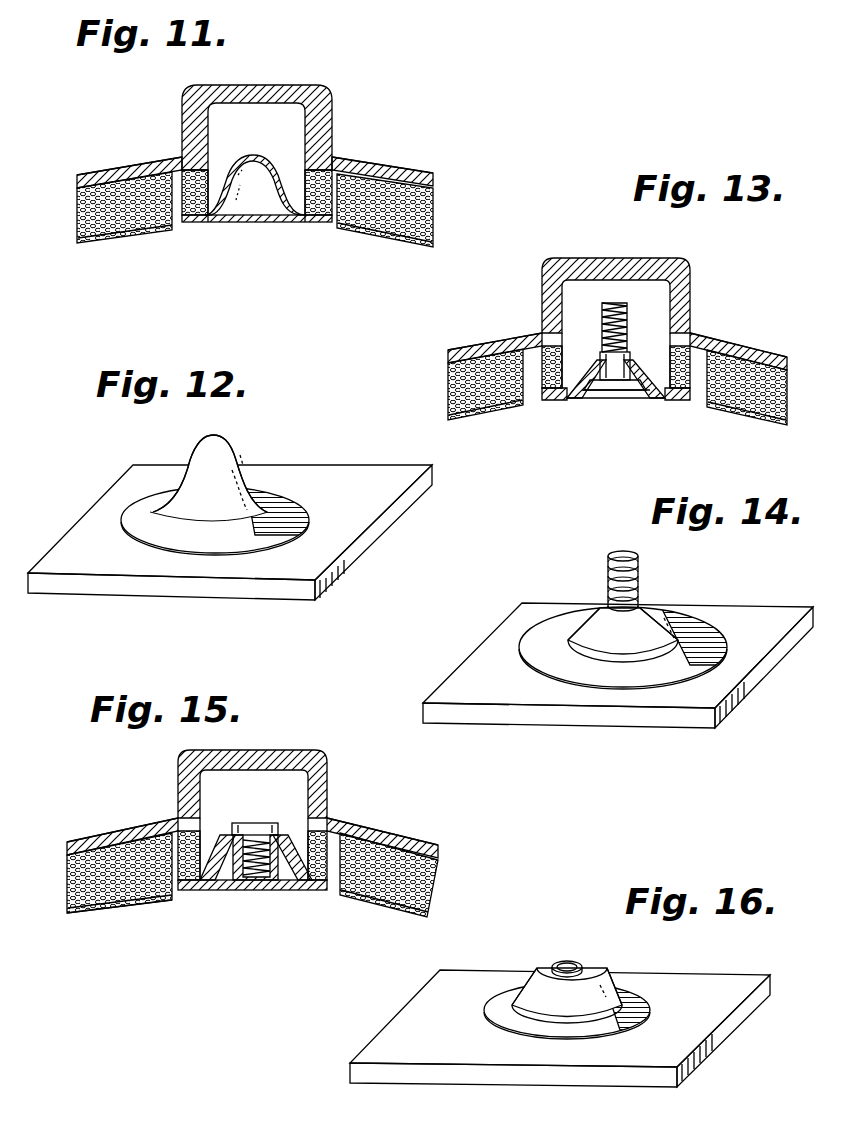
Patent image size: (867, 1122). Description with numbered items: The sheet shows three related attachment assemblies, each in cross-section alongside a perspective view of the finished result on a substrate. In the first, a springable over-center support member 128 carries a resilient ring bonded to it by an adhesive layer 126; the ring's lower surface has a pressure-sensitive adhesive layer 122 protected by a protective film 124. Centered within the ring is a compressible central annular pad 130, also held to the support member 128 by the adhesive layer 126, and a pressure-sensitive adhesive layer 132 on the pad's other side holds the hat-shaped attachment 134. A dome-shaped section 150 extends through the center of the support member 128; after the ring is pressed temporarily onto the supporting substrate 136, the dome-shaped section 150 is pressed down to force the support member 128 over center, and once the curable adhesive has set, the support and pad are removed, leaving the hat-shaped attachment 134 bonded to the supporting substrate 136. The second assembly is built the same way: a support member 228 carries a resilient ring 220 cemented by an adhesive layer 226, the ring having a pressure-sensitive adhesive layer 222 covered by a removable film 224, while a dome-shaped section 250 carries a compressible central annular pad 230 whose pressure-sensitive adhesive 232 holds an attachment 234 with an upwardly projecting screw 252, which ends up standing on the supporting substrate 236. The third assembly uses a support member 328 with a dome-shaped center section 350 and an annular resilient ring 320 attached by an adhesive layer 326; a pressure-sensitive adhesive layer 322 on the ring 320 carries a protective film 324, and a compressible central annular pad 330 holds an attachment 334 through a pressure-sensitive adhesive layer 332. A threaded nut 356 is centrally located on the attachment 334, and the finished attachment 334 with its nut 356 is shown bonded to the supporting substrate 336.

In FIG. 11, the pressure-sensitive adhesive layer 122 is at (150, 233).
In FIG. 11, the protective film 124 is at (90, 242).
In FIG. 11, the adhesive layer 126 is at (193, 170).
In FIG. 11, the springable support member 128 is at (110, 167).
In FIG. 11, the compressible central annular pad 130 is at (340, 172).
In FIG. 11, the pressure-sensitive adhesive layer 132 is at (200, 222).
In FIG. 11, the hat-shaped attachment 134 is at (290, 222).
In FIG. 12, the hat-shaped attachment 134 is at (217, 455).
In FIG. 12, the supporting substrate 136 is at (338, 533).
In FIG. 11, the dome-shaped section 150 is at (318, 113).
In FIG. 13, the resilient ring 220 is at (763, 413).
In FIG. 13, the pressure-sensitive adhesive layer 222 is at (480, 413).
In FIG. 13, the removable film 224 is at (523, 410).
In FIG. 13, the adhesive layer 226 is at (497, 342).
In FIG. 13, the support member 228 is at (520, 333).
In FIG. 13, the compressible central annular pad 230 is at (537, 393).
In FIG. 13, the pressure-sensitive adhesive 232 is at (687, 400).
In FIG. 13, the attachment 234 is at (660, 400).
In FIG. 14, the attachment 234 is at (557, 630).
In FIG. 14, the supporting substrate 236 is at (722, 622).
In FIG. 13, the dome-shaped section 250 is at (660, 266).
In FIG. 13, the screw 252 is at (630, 323).
In FIG. 14, the screw 252 is at (640, 582).
In FIG. 15, the annular resilient ring 320 is at (393, 903).
In FIG. 15, the pressure-sensitive adhesive layer 322 is at (337, 897).
In FIG. 15, the protective film 324 is at (92, 917).
In FIG. 15, the adhesive layer 326 is at (410, 847).
In FIG. 15, the support member 328 is at (127, 833).
In FIG. 15, the compressible central annular pad 330 is at (333, 840).
In FIG. 15, the pressure-sensitive adhesive layer 332 is at (172, 905).
In FIG. 15, the attachment 334 is at (197, 890).
In FIG. 16, the attachment 334 is at (603, 967).
In FIG. 16, the supporting substrate 336 is at (653, 1052).
In FIG. 15, the dome-shaped center section 350 is at (317, 768).
In FIG. 15, the threaded nut 356 is at (273, 827).
In FIG. 16, the threaded nut 356 is at (550, 962).